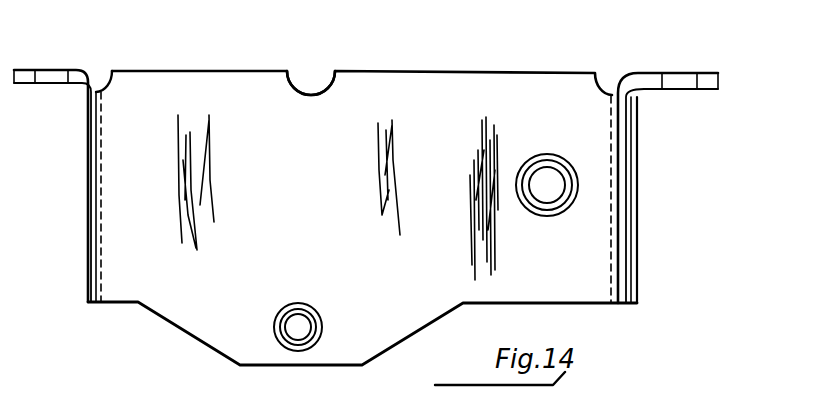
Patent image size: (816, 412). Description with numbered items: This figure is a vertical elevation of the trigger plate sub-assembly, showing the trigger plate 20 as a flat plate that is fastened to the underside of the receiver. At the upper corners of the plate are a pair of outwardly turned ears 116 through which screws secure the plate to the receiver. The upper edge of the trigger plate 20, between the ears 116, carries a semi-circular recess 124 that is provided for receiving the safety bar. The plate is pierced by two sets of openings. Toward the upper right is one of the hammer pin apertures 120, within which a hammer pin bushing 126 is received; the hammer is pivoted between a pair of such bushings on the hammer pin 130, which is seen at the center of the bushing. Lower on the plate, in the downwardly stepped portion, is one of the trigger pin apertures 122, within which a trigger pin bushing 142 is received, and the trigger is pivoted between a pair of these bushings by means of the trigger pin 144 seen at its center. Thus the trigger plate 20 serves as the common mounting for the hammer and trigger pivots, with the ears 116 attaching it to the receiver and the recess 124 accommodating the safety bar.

The trigger plate 20 is at (638, 200).
The ears 116 is at (25, 72).
The semi-circular recess 124 is at (330, 72).
The hammer pin apertures 120 is at (525, 207).
The hammer pin bushings 126 is at (572, 148).
The hammer pin 130 is at (553, 197).
The trigger pin bushings 142 is at (298, 290).
The trigger pin apertures 122 is at (316, 310).
The trigger pin 144 is at (305, 331).